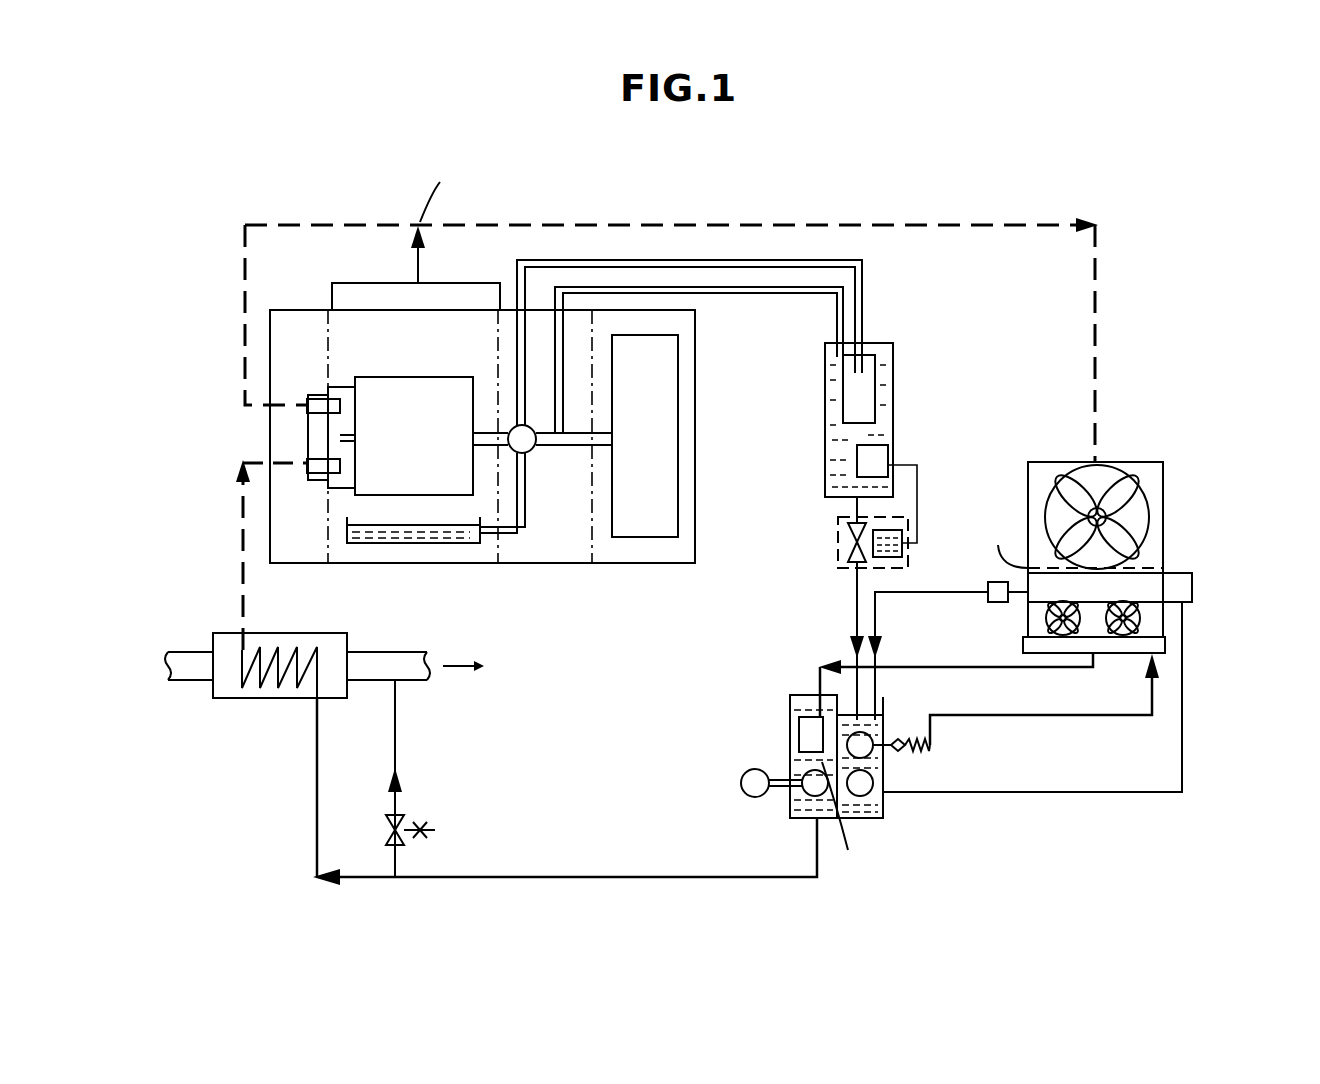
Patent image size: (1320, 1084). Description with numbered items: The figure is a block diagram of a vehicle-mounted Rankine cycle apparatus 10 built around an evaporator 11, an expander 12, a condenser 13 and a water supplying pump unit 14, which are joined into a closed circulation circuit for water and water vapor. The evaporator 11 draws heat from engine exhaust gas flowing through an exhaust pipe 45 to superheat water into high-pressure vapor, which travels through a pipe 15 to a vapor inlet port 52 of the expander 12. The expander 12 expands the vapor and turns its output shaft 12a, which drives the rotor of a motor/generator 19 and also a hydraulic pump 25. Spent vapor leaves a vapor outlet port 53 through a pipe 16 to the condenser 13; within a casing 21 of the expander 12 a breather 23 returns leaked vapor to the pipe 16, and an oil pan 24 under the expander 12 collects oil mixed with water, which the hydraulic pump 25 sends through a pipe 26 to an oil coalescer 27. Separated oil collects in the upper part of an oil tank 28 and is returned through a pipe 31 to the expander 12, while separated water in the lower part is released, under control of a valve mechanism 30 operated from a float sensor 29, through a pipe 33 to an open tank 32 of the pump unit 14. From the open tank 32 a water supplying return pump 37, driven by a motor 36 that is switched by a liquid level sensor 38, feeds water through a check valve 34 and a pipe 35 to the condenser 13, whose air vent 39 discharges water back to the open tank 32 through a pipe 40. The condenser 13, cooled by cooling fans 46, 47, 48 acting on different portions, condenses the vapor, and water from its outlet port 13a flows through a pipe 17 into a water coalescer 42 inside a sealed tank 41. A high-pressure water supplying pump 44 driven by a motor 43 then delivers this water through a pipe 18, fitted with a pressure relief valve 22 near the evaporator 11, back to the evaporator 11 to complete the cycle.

The Rankine cycle apparatus 10 is at (811, 166).
The evaporator 11 is at (228, 700).
The expander 12 is at (433, 399).
The output shaft 12a is at (493, 430).
The condenser 13 is at (1115, 583).
The outlet port 13a is at (1100, 655).
The water supplying pump unit 14 is at (848, 790).
The pipe 15 is at (240, 520).
The pipe 16 is at (556, 222).
The pipe 17 is at (953, 669).
The pipe 18 is at (507, 880).
The motor/generator 19 is at (630, 537).
The casing 21 is at (372, 563).
The pressure relief valve 22 is at (405, 828).
The breather 23 is at (413, 268).
The oil pan 24 is at (440, 543).
The hydraulic pump 25 is at (528, 455).
The pipe 26 is at (718, 260).
The oil coalescer 27 is at (875, 380).
The oil tank 28 is at (865, 414).
The float sensor 29 is at (890, 456).
The valve mechanism 30 is at (838, 540).
The pipe 31 is at (741, 294).
The open tank 32 is at (883, 720).
The pipe 33 is at (852, 612).
The check valve 34 is at (905, 750).
The pipe 35 is at (1100, 718).
The motor 36 is at (870, 796).
The water supplying return pump 37 is at (870, 752).
The liquid level sensor 38 is at (1192, 588).
The air vent 39 is at (997, 603).
The pipe 40 is at (948, 633).
The sealed tank 41 is at (800, 760).
The water coalescer 42 is at (808, 730).
The motor 43 is at (748, 797).
The high-pressure water supplying pump 44 is at (800, 778).
The exhaust pipe 45 is at (413, 774).
The cooling fan 46 is at (1145, 508).
The cooling fan 47 is at (1045, 620).
The cooling fan 48 is at (1118, 655).
The vapor inlet port 52 is at (312, 472).
The vapor outlet port 53 is at (312, 402).